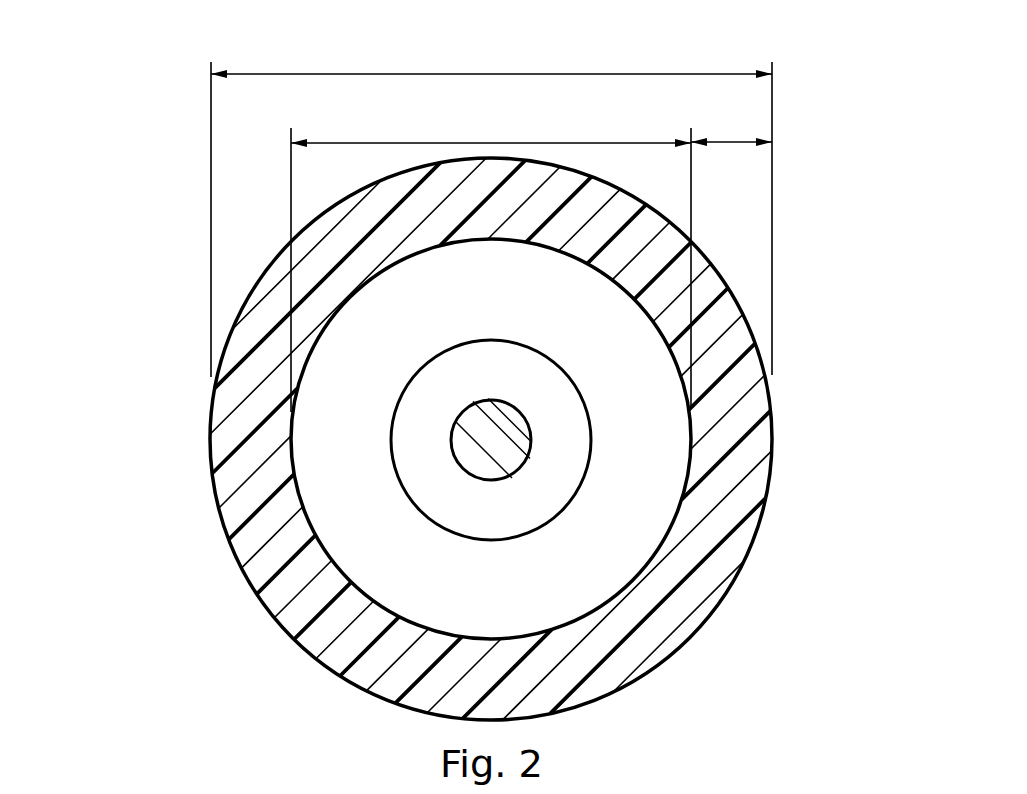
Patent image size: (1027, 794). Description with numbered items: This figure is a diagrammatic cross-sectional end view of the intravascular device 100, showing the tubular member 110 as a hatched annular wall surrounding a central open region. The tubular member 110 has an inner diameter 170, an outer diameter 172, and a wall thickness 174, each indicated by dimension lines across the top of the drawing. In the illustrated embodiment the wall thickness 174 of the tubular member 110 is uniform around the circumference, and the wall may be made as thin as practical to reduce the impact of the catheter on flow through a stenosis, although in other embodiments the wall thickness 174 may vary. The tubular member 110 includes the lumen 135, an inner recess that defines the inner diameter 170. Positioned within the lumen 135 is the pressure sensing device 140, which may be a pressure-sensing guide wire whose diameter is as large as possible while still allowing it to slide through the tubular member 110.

The intravascular device 100 is at (156, 104).
The tubular member 110 is at (224, 517).
The lumen 135 is at (560, 623).
The pressure sensing device 140 is at (590, 437).
The inner diameter 170 is at (397, 141).
The outer diameter 172 is at (348, 73).
The wall thickness 174 is at (730, 140).